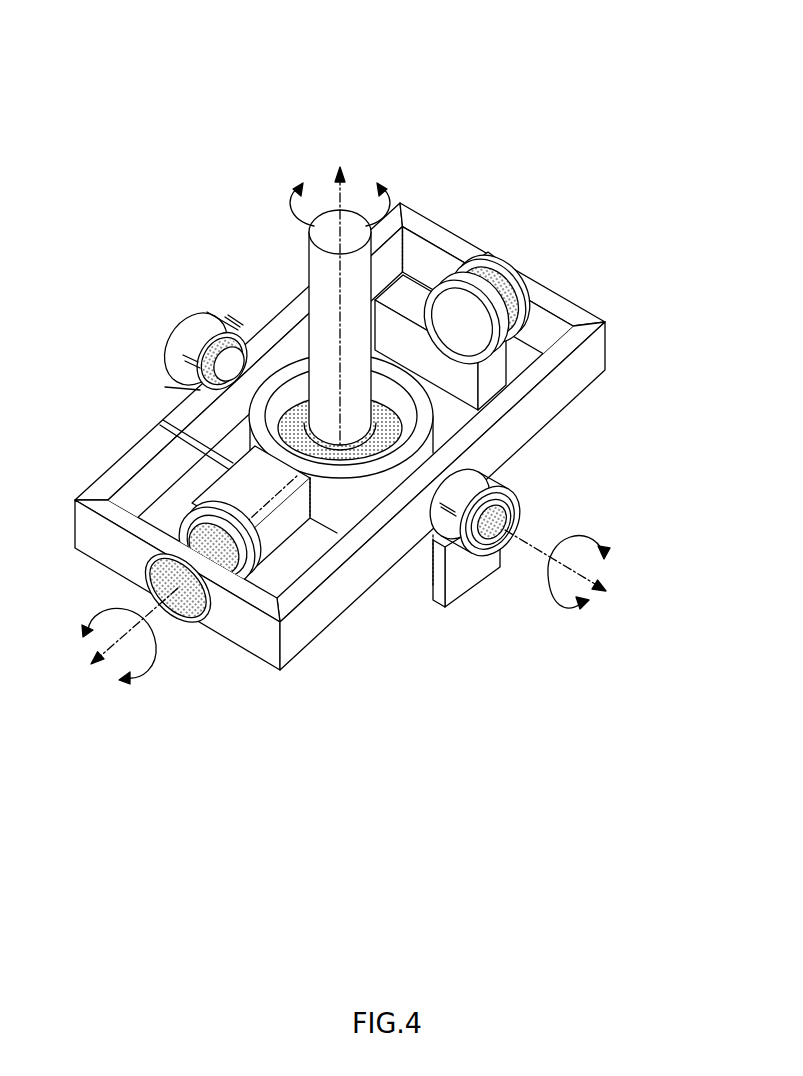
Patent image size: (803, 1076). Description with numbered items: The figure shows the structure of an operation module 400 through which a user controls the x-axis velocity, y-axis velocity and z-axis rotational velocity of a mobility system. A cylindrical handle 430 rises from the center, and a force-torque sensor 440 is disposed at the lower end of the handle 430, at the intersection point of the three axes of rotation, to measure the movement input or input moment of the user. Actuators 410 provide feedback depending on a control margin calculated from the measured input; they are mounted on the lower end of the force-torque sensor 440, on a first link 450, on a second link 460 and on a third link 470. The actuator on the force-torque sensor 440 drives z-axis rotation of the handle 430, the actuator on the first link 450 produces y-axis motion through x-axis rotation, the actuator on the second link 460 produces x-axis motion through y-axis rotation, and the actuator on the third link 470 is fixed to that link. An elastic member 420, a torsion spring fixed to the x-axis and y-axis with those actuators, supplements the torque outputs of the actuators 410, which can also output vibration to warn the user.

The operation module 400 is at (355, 74).
The actuators 410 is at (155, 578).
The elastic member 420 is at (508, 313).
The handle 430 is at (313, 272).
The force-torque sensor 440 is at (292, 440).
The first link 450 is at (403, 338).
The second link 460 is at (590, 360).
The third link 470 is at (438, 592).